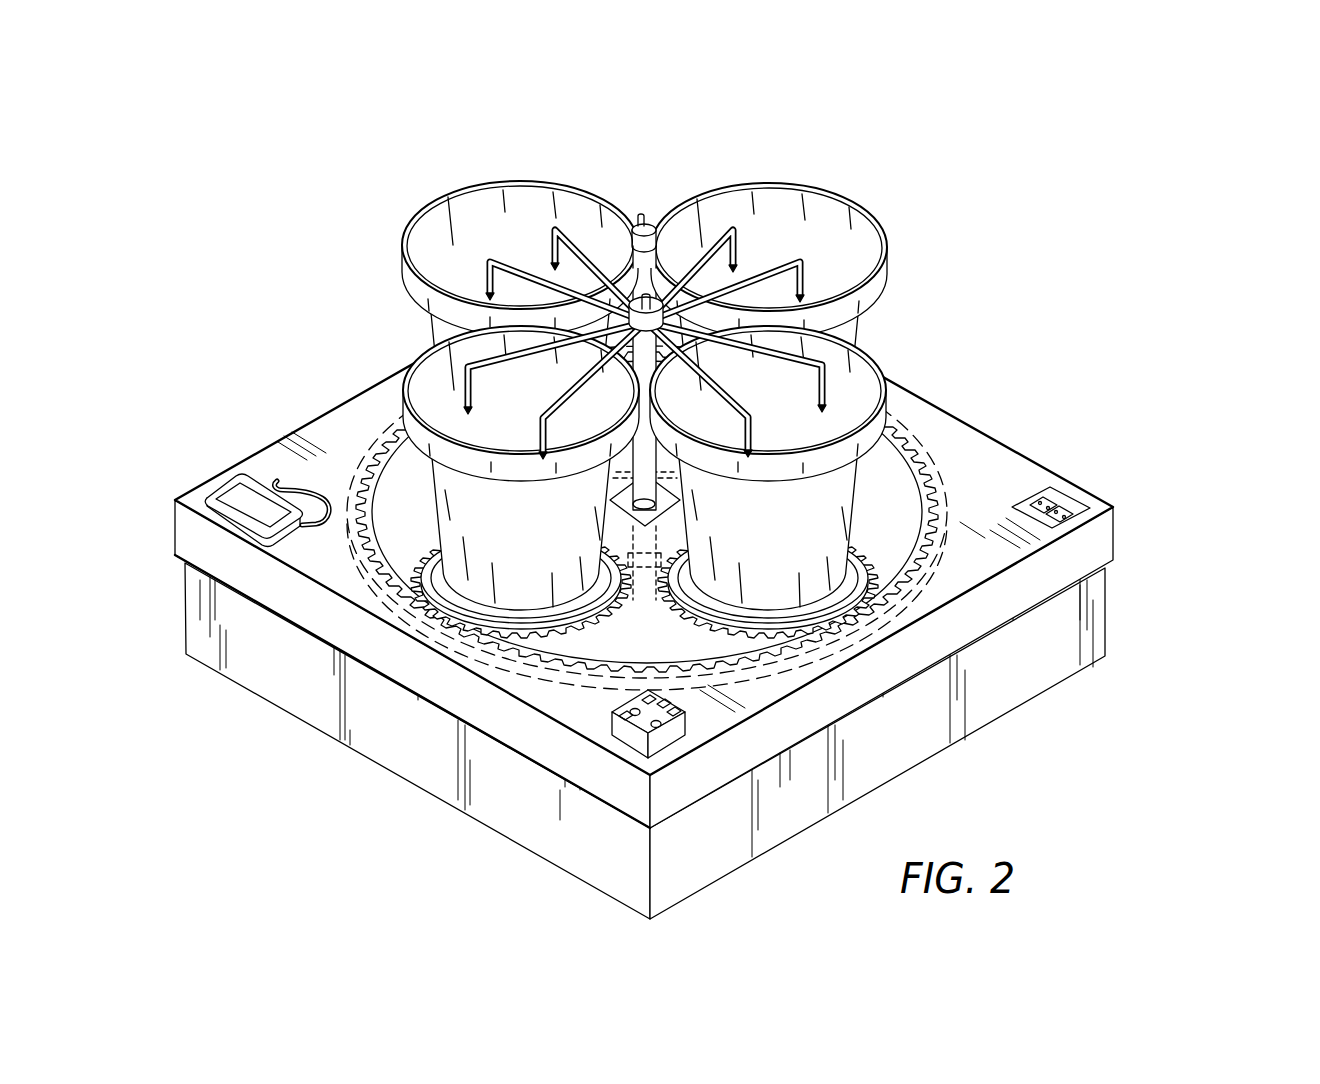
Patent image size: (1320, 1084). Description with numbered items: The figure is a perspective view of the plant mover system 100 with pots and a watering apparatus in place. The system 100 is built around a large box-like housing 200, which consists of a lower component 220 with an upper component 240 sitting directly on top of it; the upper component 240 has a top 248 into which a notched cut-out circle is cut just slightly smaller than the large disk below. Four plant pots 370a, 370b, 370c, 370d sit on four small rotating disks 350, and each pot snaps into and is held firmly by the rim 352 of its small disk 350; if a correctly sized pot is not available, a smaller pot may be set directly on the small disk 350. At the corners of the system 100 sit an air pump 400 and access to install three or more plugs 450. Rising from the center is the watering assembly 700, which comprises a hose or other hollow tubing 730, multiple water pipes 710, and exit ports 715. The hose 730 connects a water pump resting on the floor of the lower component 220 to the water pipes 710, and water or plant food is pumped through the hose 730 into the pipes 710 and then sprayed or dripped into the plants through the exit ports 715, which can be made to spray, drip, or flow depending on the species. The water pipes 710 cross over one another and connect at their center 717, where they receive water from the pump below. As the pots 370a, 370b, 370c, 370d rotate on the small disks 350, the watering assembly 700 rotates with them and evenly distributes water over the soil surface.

The plant mover system 100 is at (240, 312).
The housing 200 is at (729, 578).
The lower component 220 is at (1115, 620).
The upper component 240 is at (1115, 540).
The top 248 is at (329, 567).
The small rotating disk 350 is at (868, 583).
The rim 352 is at (877, 603).
The plant pot 370a is at (460, 190).
The plant pot 370b is at (855, 210).
The plant pot 370c is at (870, 360).
The plant pot 370d is at (417, 360).
The air pump 400 is at (238, 490).
The plug 450 is at (670, 730).
The watering assembly 700 is at (653, 224).
The water pipe 710 is at (586, 294).
The exit port 715 is at (752, 447).
The center 717 is at (630, 303).
The hose 730 is at (462, 360).